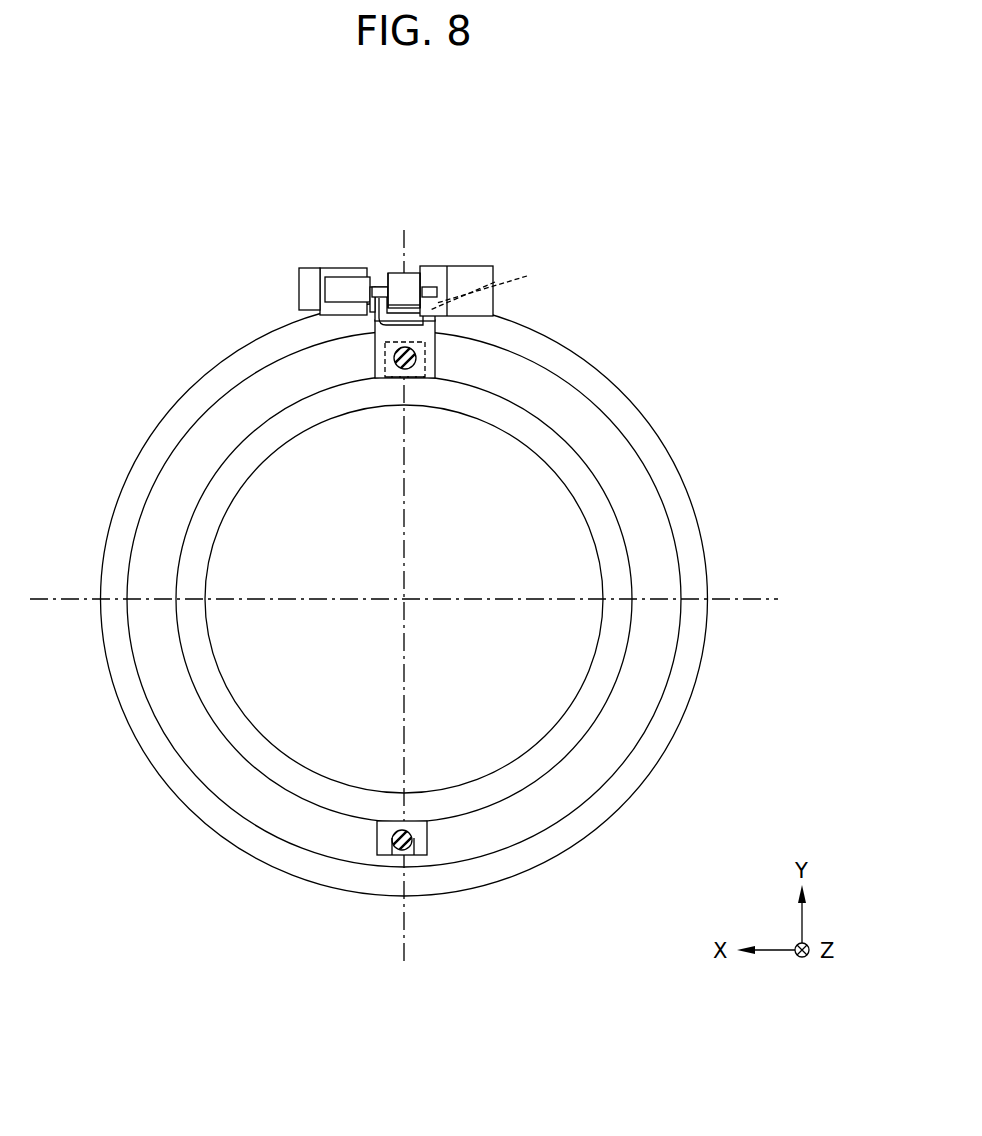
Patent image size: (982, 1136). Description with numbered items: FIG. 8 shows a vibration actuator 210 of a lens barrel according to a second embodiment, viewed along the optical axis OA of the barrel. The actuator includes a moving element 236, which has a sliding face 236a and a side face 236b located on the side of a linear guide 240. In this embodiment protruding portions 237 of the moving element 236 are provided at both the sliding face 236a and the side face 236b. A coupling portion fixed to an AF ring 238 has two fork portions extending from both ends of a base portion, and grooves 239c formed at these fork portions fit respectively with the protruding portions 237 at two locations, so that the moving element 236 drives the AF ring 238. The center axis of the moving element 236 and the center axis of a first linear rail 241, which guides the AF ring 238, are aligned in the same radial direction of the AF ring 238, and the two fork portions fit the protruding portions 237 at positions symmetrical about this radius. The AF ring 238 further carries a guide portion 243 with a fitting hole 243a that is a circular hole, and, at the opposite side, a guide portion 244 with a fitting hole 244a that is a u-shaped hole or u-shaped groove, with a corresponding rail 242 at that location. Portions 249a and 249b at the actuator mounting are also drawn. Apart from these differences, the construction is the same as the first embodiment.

The vibration actuator 210 is at (322, 201).
The moving element 236 is at (418, 274).
The sliding face 236a is at (377, 270).
The side face 236b is at (424, 278).
The protruding portion 237 is at (378, 290).
The AF ring 238 is at (575, 470).
The groove 239c is at (508, 286).
The linear guide 240 is at (443, 267).
The first linear rail 241 is at (398, 372).
The fixing screw 242 is at (394, 856).
The guide portion 243 is at (423, 373).
The fitting hole 243a is at (410, 372).
The guide portion 244 is at (427, 856).
The fitting hole 244a is at (408, 858).
The fixing portion 249a is at (437, 357).
The engaging portion 249b is at (437, 318).
The optical axis OA is at (407, 603).